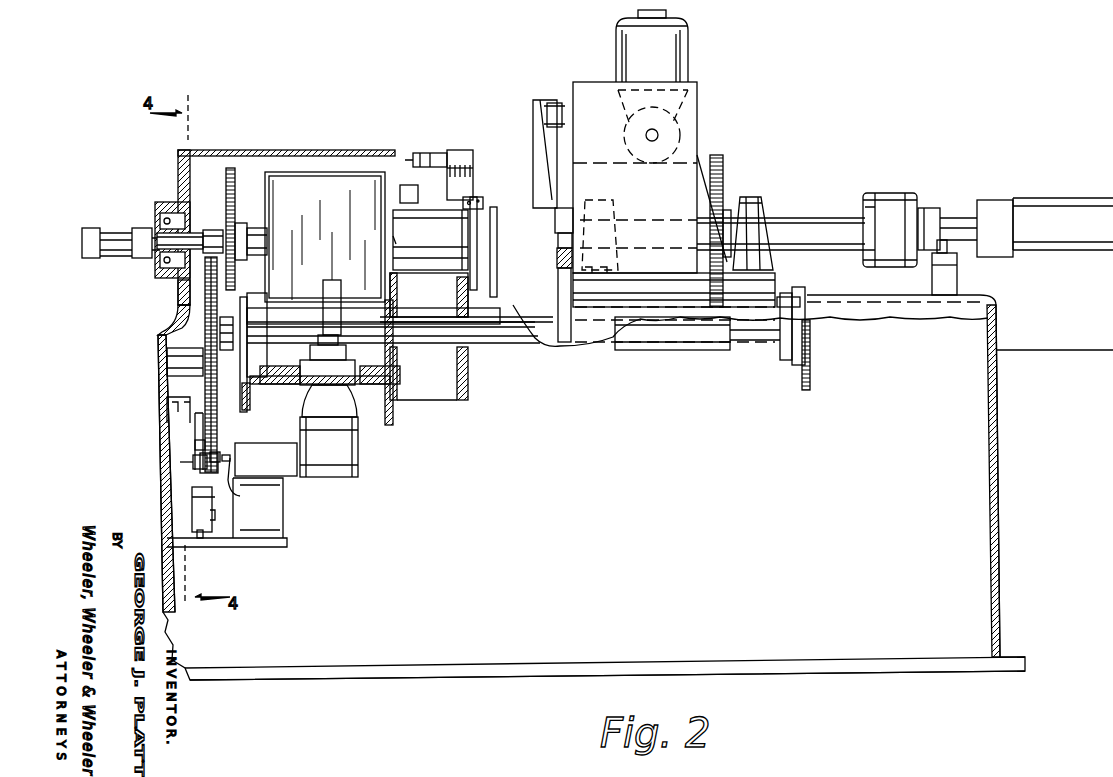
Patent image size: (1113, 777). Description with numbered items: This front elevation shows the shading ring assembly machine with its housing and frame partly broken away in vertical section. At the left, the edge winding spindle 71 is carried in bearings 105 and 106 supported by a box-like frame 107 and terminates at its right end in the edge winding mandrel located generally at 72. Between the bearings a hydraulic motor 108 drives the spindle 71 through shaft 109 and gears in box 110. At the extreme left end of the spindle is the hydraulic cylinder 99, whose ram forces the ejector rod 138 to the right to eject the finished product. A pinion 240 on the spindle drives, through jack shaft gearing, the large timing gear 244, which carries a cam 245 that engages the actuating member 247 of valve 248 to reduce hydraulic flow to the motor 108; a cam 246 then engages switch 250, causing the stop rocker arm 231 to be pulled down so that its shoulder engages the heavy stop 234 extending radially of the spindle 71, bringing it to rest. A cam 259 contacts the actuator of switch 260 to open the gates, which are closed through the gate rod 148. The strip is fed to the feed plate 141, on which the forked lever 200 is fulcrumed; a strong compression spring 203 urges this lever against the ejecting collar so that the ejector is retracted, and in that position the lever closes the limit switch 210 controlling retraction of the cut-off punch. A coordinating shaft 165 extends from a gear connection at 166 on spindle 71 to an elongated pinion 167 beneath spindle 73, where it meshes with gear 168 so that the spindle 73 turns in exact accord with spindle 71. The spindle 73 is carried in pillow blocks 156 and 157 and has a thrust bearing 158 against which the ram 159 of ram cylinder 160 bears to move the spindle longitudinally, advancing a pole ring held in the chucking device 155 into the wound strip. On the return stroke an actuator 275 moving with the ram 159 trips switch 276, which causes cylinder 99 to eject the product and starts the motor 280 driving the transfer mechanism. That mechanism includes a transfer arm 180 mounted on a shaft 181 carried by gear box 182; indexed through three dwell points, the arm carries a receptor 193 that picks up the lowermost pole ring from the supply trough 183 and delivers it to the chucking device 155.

The hydraulic cylinder 99 is at (122, 230).
The box-like frame 107 is at (178, 160).
The bearing 105 is at (193, 222).
The ejector rod 138 is at (180, 295).
The pinion 240 is at (231, 205).
The gear connection 166 is at (205, 320).
The spindle 71 is at (253, 226).
The bearing 106 is at (372, 215).
The edge winding mandrel 72 is at (413, 243).
The gear box 110 is at (341, 291).
The shaft 109 is at (323, 318).
The hydraulic motor 108 is at (340, 418).
The coordinating shaft 165 is at (510, 343).
The forked lever 200 is at (466, 182).
The feed plate 141 is at (480, 255).
The limit switch 210 is at (462, 152).
The stop rocker arm 231 is at (401, 195).
The compression spring 203 is at (470, 167).
The stop 234 is at (463, 203).
The gate rod 148 is at (497, 283).
The transfer arm 180 is at (542, 180).
The shaft 181 is at (555, 215).
The receptor 193 is at (552, 103).
The chucking device 155 is at (555, 250).
The supply trough 183 is at (552, 291).
The gear box 182 is at (673, 170).
The motor 280 is at (688, 40).
The pillow block 156 is at (600, 215).
The gear 168 is at (721, 173).
The pillow block 157 is at (757, 197).
The spindle 73 is at (822, 218).
The thrust bearing 158 is at (878, 193).
The ram 159 is at (957, 218).
The ram cylinder 160 is at (1070, 215).
The switch 276 is at (932, 275).
The actuator 275 is at (950, 246).
The elongated pinion 167 is at (712, 352).
The timing gear 244 is at (200, 383).
The switch 260 is at (192, 418).
The cam 259 is at (195, 452).
The cam 246 is at (193, 466).
The switch 250 is at (192, 505).
The cam 245 is at (218, 452).
The actuating member 247 is at (238, 497).
The valve 248 is at (286, 480).